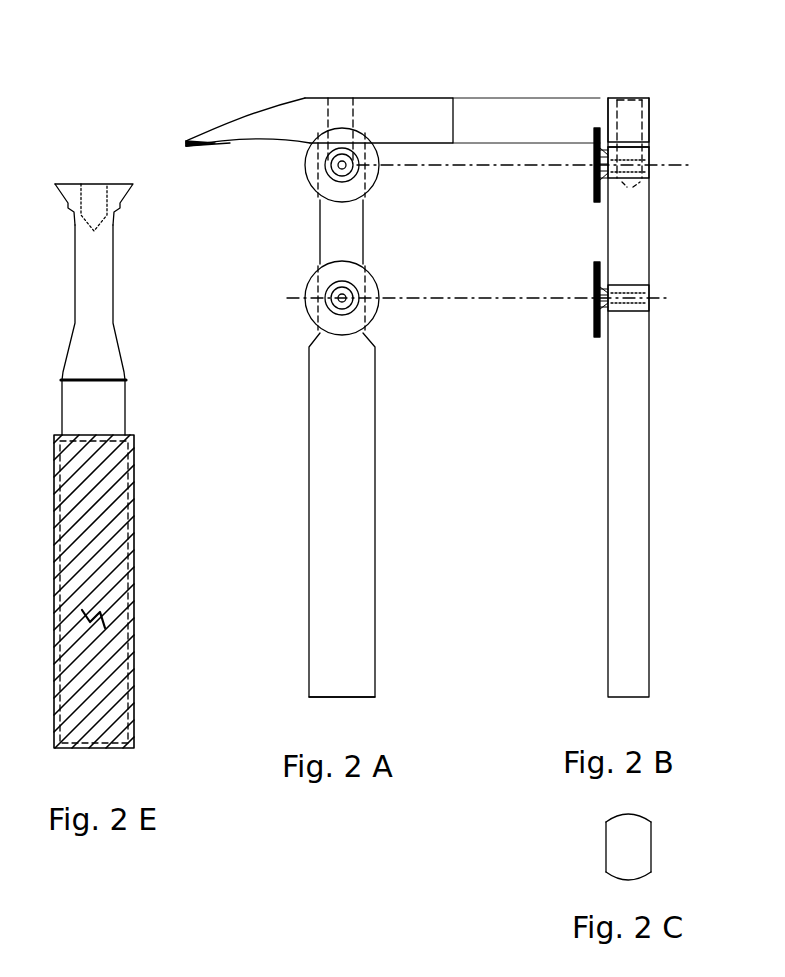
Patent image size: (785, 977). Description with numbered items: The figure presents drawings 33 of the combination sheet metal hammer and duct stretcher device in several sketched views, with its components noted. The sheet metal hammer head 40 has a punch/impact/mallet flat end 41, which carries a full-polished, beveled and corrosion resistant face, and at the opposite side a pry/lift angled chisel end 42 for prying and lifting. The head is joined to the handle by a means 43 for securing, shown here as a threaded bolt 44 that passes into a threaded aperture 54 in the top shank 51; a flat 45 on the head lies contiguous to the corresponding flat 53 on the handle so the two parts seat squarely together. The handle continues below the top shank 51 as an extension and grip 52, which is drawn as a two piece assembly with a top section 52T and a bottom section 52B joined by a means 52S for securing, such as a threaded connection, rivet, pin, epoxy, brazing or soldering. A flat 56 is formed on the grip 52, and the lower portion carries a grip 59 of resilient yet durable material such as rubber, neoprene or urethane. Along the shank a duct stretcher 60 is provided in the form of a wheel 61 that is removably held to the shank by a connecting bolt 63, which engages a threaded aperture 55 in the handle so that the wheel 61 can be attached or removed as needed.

In FIG. 2A, the drawings 33 is at (488, 852).
In FIG. 2A, the sheet metal hammer head 40 is at (410, 97).
In FIG. 2A, the punch/impact/mallet flat end 41 is at (458, 118).
In FIG. 2A, the pry/lift angled chisel end 42 is at (230, 120).
In FIG. 2A, the means for securing/connecting head to handle 43 is at (368, 93).
In FIG. 2B, the means for securing/connecting head to handle 43 is at (687, 113).
In FIG. 2A, the threaded bolt 44 is at (350, 95).
In FIG. 2B, the threaded bolt 44 is at (630, 123).
In FIG. 2A, the flat 45 is at (282, 149).
In FIG. 2E, the top shank 51 is at (153, 302).
In FIG. 2A, the top shank 51 is at (320, 238).
In FIG. 2A, the extension and grip 52 is at (333, 535).
In FIG. 2E, the top section 52T is at (97, 336).
In FIG. 2E, the means for securing/connecting top section to bottom section 52S is at (97, 378).
In FIG. 2E, the bottom section 52B is at (115, 417).
In FIG. 2E, the flat 53 is at (77, 148).
In FIG. 2A, the flat 53 is at (234, 174).
In FIG. 2E, the threaded aperture 54 is at (90, 198).
In FIG. 2B, the threaded aperture 54 is at (643, 165).
In FIG. 2B, the threaded aperture 55 is at (630, 308).
In FIG. 2E, the flat 56 is at (134, 611).
In FIG. 2A, the flat 56 is at (392, 717).
In FIG. 2B, the flat 56 is at (687, 416).
In FIG. 2C, the flat 56 is at (630, 848).
In FIG. 2E, the grip 59 is at (106, 607).
In FIG. 2A, the duct stretcher 60 is at (565, 187).
In FIG. 2A, the wheel 61 is at (322, 182).
In FIG. 2A, the connecting bolt 63 is at (338, 173).